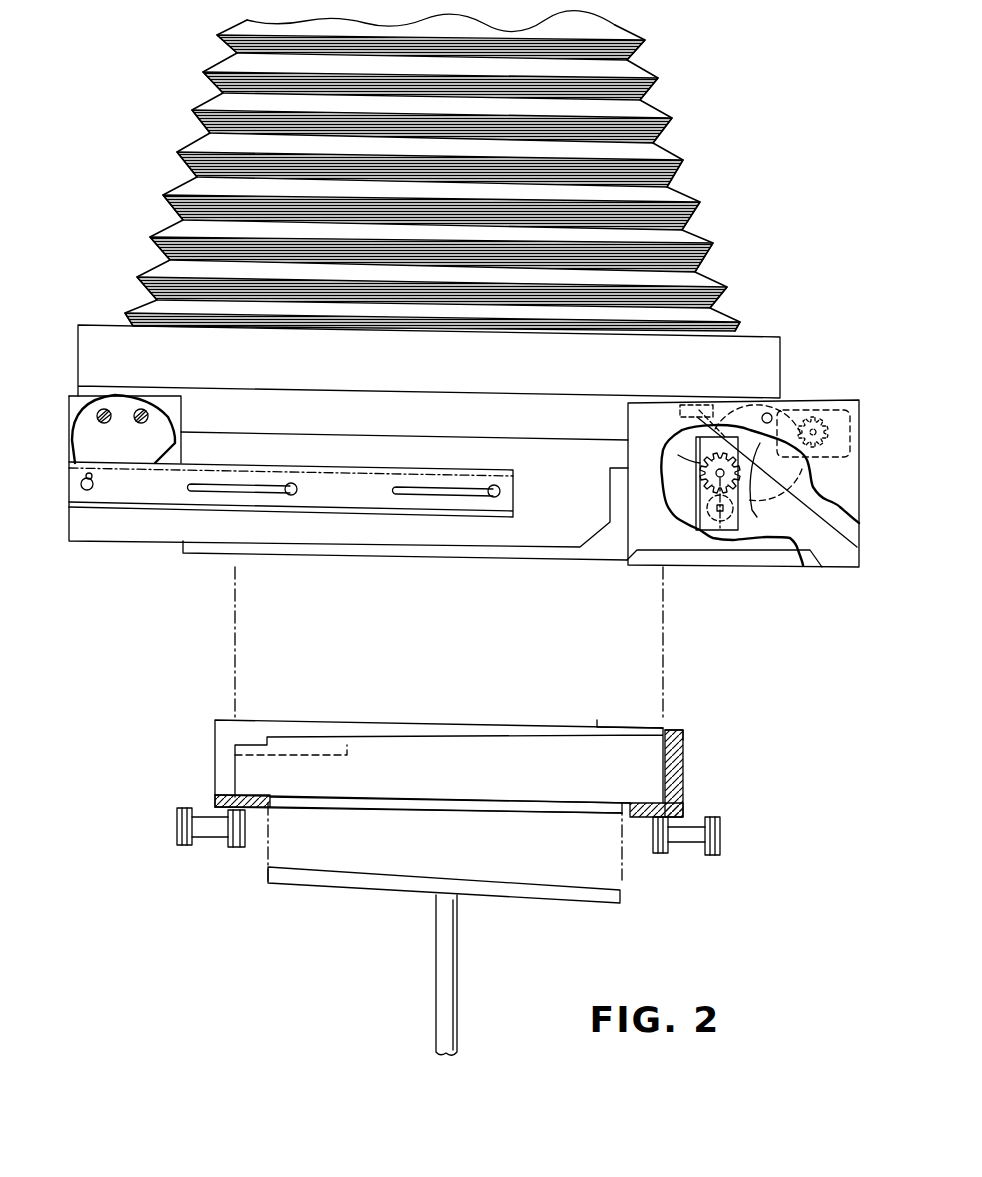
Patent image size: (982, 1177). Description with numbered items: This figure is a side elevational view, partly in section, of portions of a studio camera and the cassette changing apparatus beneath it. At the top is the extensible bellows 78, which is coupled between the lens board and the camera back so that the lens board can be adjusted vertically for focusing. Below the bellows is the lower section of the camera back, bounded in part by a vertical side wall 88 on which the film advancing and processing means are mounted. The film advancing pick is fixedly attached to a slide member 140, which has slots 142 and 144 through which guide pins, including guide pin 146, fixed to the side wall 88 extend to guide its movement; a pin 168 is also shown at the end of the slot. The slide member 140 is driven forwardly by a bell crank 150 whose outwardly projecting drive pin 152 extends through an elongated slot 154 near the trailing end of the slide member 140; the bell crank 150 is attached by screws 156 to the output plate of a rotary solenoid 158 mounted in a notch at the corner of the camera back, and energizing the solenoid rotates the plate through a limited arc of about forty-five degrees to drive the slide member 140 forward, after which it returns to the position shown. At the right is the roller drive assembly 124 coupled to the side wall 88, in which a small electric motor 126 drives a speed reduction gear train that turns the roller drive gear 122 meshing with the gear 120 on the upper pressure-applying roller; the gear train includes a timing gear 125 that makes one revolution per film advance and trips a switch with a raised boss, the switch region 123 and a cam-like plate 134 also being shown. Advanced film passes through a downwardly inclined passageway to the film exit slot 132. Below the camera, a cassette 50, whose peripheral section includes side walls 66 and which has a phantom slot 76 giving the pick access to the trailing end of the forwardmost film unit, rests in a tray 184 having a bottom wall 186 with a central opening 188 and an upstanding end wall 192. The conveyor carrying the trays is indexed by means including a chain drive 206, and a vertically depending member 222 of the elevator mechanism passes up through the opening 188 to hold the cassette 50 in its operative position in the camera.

The extensible bellows 78 is at (683, 160).
The side wall 88 is at (565, 509).
The bell crank 150 is at (66, 460).
The rotary solenoid 158 is at (70, 420).
The screws 156 is at (145, 410).
The drive pin 152 is at (81, 485).
The elongated slot 154 is at (86, 492).
The slide member 140 is at (336, 468).
The slot 144 is at (222, 485).
The pin 168 is at (297, 490).
The slot 142 is at (430, 490).
The guide pin 146 is at (501, 490).
The film exit slot 132 is at (835, 556).
The cam plate 134 is at (817, 493).
The gear 120 is at (680, 455).
The roller drive gear 122 is at (754, 508).
The roller drive assembly 124 is at (800, 415).
The timing gear 125 is at (789, 403).
The electric motor 126 is at (848, 398).
The switch 123 is at (702, 405).
The side walls 66 is at (592, 776).
The slot 76 is at (282, 748).
The cassette 50 is at (647, 726).
The end wall 192 is at (674, 730).
The tray 184 is at (690, 766).
The opening 188 is at (456, 822).
The bottom wall 186 is at (643, 818).
The chain drive 206 is at (551, 897).
The vertically depending member 222 is at (437, 950).